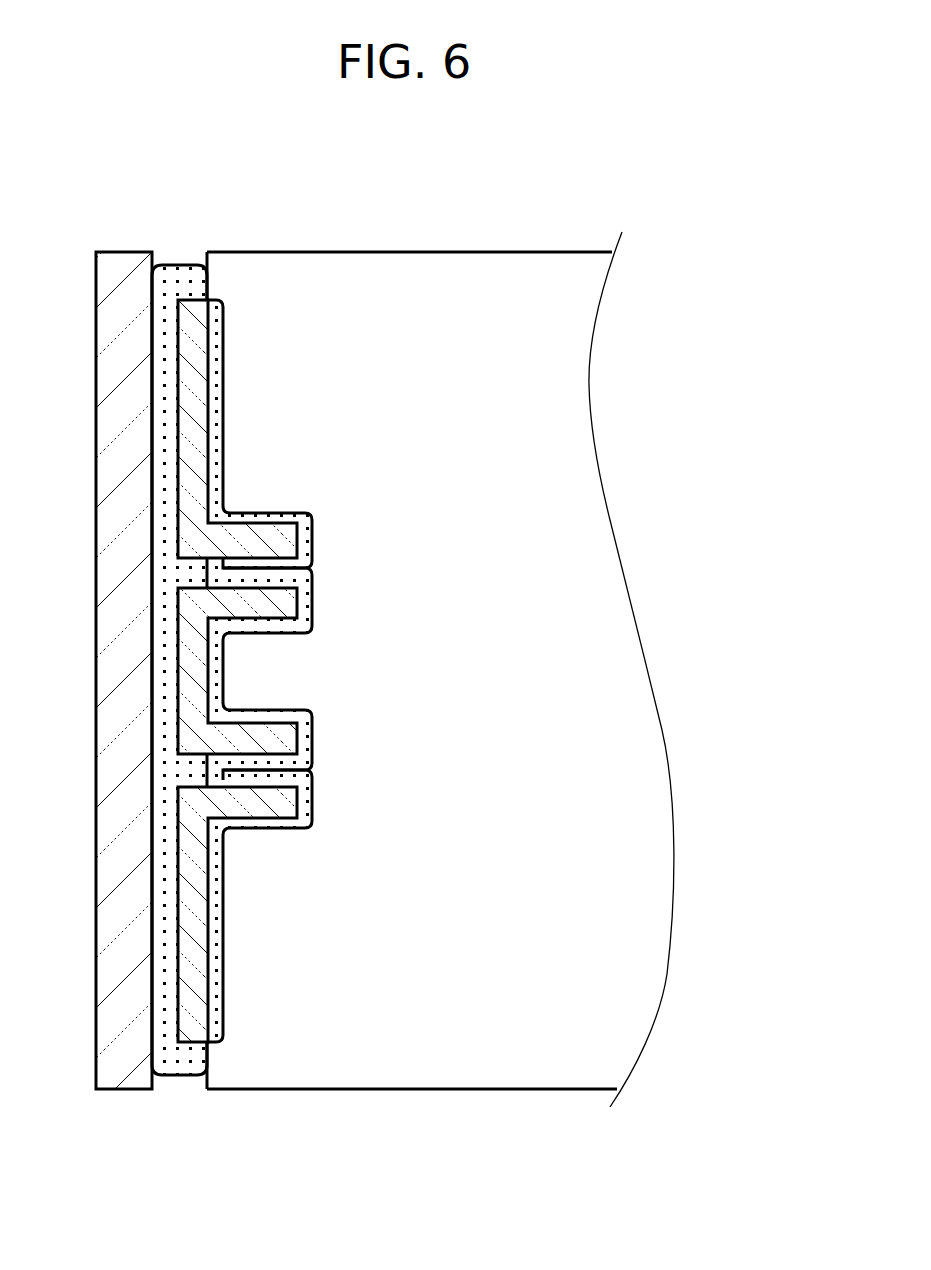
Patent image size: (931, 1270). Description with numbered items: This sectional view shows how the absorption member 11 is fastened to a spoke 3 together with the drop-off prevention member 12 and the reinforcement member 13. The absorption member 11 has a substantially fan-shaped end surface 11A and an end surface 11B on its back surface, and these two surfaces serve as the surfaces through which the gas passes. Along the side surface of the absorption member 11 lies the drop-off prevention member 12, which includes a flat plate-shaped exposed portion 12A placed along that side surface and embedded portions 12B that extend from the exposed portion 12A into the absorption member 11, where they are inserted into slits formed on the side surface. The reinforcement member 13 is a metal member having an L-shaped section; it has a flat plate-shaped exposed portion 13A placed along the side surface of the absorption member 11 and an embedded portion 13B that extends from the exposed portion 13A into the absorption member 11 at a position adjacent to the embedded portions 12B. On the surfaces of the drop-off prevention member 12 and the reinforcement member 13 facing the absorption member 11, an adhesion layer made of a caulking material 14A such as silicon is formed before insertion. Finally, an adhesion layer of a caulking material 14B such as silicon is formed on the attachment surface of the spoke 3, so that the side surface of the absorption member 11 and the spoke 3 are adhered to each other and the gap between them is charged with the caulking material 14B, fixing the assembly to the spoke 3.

The spoke 3 is at (104, 1070).
The absorption member 11 is at (576, 424).
The end surface 11A is at (494, 230).
The end surface of back surface 11B is at (511, 1120).
The drop-off prevention member 12 is at (737, 597).
The exposed portion 12A is at (200, 653).
The embedded portions 12B is at (292, 604).
The reinforcement member 13 is at (162, 192).
The exposed portion 13A is at (190, 308).
The embedded portion 13B is at (258, 533).
The caulking material 14A is at (312, 537).
The caulking material 14B is at (175, 1075).